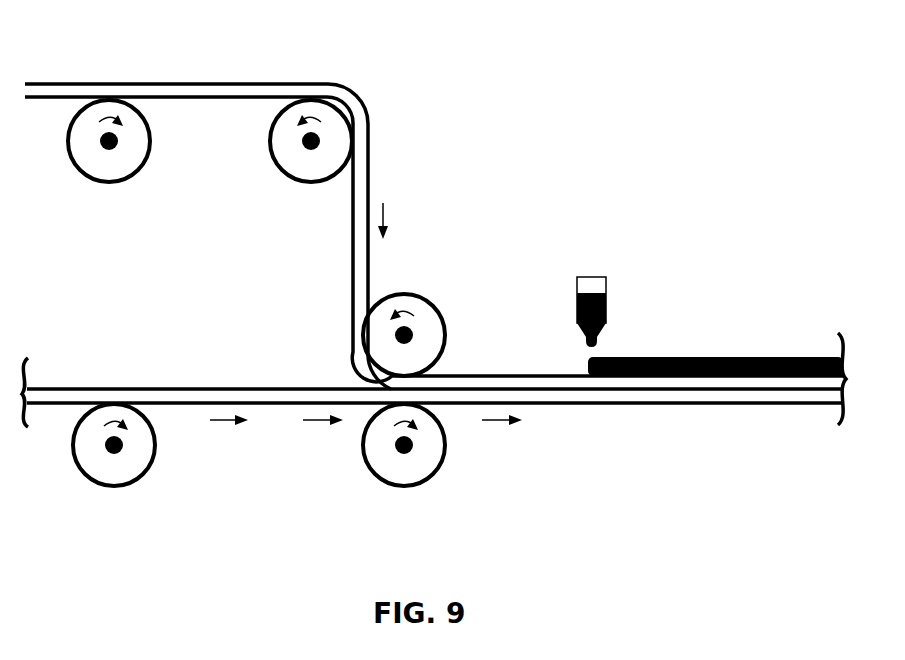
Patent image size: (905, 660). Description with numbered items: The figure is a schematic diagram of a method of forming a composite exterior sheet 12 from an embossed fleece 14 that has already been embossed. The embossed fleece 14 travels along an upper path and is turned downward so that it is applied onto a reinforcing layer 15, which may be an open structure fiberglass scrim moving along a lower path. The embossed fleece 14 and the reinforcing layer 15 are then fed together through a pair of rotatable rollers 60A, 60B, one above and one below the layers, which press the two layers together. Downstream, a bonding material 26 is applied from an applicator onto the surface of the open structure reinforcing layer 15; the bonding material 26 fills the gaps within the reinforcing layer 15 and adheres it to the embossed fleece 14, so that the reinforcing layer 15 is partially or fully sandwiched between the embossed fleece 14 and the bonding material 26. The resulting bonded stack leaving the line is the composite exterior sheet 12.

The embossed fleece 14 is at (88, 80).
The reinforcing layer 15 is at (100, 389).
The bonding material 26 is at (603, 290).
The rotatable roller 60A is at (445, 325).
The rotatable roller 60B is at (383, 477).
The composite exterior sheet 12 is at (676, 434).